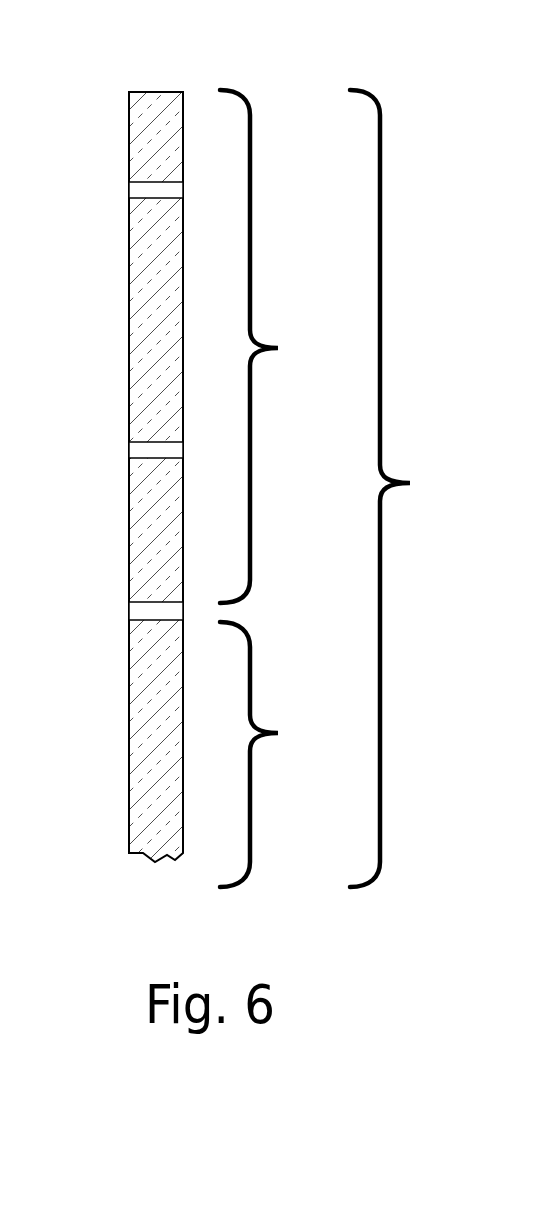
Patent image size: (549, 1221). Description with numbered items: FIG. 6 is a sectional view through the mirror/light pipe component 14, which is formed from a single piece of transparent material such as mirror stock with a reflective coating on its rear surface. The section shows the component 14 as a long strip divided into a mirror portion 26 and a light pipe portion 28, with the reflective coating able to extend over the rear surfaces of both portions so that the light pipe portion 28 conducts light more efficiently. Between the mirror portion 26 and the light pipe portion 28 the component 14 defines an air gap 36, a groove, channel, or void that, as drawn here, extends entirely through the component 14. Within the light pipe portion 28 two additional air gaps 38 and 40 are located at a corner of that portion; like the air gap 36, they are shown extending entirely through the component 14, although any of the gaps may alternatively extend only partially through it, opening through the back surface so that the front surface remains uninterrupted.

The mirror/light pipe component 14 is at (395, 488).
The mirror portion 26 is at (264, 754).
The light pipe portion 28 is at (265, 346).
The air gap 36 is at (142, 612).
The air gap 38 is at (142, 190).
The air gap 40 is at (142, 450).